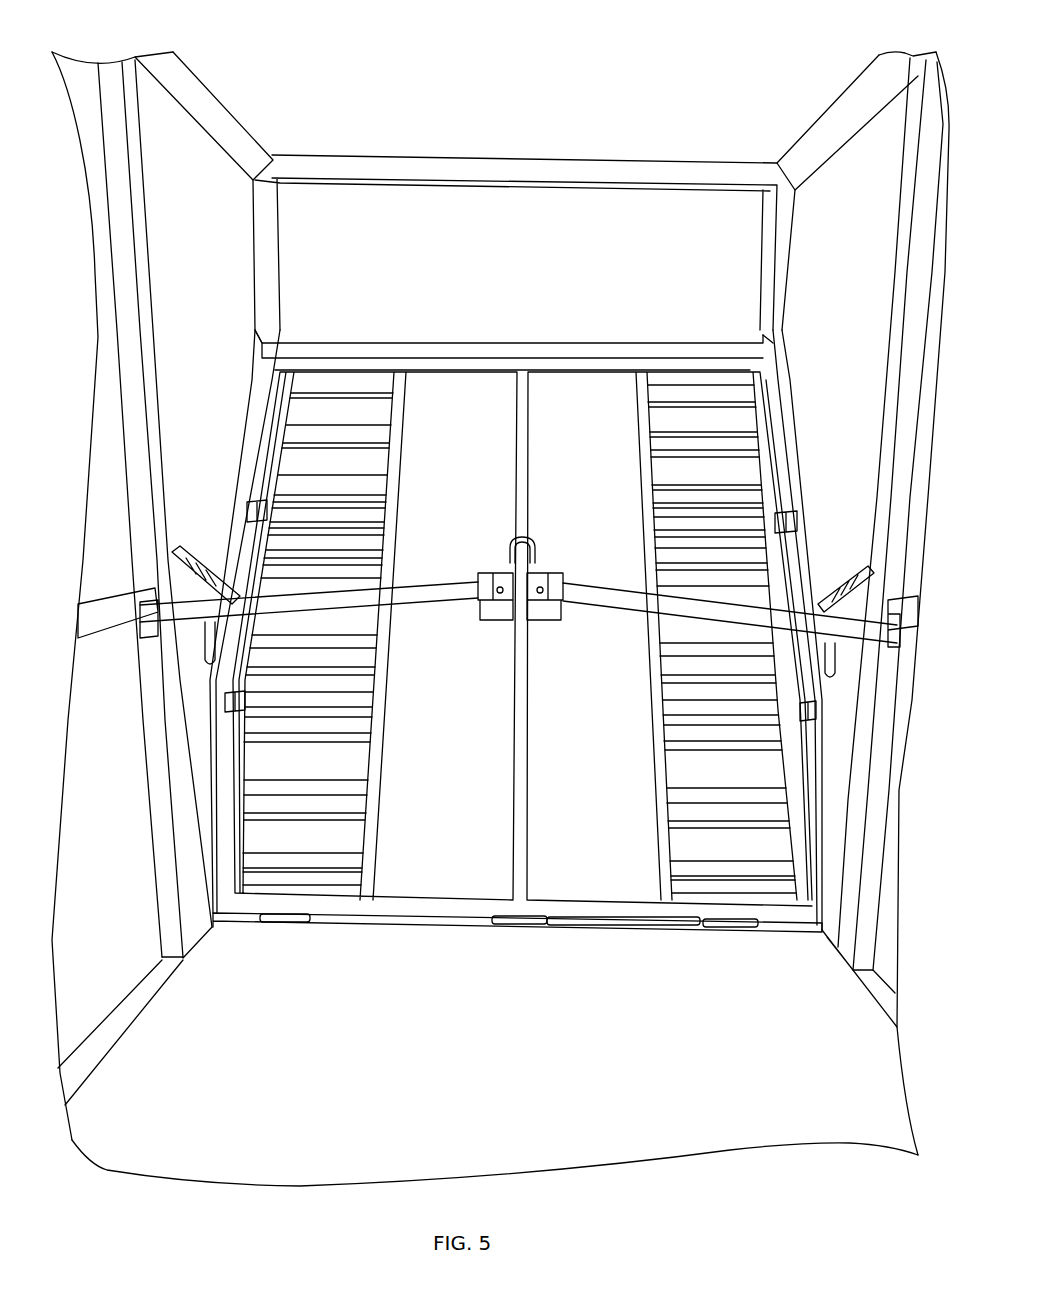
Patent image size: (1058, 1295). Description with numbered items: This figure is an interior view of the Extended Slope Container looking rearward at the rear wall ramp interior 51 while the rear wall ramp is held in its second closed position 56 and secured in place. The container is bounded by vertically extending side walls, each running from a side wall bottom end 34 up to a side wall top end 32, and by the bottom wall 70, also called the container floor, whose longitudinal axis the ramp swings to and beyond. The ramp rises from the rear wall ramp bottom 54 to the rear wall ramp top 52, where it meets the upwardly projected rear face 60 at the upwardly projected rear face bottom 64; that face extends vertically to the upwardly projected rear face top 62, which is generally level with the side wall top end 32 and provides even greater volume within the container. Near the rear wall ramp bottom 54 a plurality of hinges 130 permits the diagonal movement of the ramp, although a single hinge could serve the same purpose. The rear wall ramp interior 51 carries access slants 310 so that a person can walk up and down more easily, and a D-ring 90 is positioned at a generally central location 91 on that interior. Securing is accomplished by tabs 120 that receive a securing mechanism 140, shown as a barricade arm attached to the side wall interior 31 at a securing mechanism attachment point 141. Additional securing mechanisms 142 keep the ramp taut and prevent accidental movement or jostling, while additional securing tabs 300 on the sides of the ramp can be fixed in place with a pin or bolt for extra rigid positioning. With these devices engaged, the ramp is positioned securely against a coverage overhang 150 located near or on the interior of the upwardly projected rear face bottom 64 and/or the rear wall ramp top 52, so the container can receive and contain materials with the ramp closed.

The side wall interior 31 is at (205, 205).
The side wall top end 32 is at (230, 73).
The side wall bottom end 34 is at (165, 1000).
The rear wall ramp interior 51 is at (600, 390).
The rear wall ramp top 52 is at (432, 343).
The rear wall ramp bottom 54 is at (405, 928).
The second closed position 56 is at (487, 390).
The upwardly projected rear face 60 is at (620, 205).
The upwardly projected rear face top 62 is at (520, 145).
The upwardly projected rear face bottom 64 is at (345, 343).
The bottom wall 70 is at (545, 1070).
The D-ring 90 is at (540, 530).
The generally central location 91 is at (487, 530).
The tabs 120 is at (565, 570).
The hinges 130 is at (312, 935).
The securing mechanism 140 is at (345, 585).
The securing mechanism attachment point 141 is at (143, 648).
The additional securing mechanisms 142 is at (112, 545).
The coverage overhang 150 is at (258, 333).
The additional securing tabs 300 is at (252, 492).
The access slants 310 is at (245, 815).